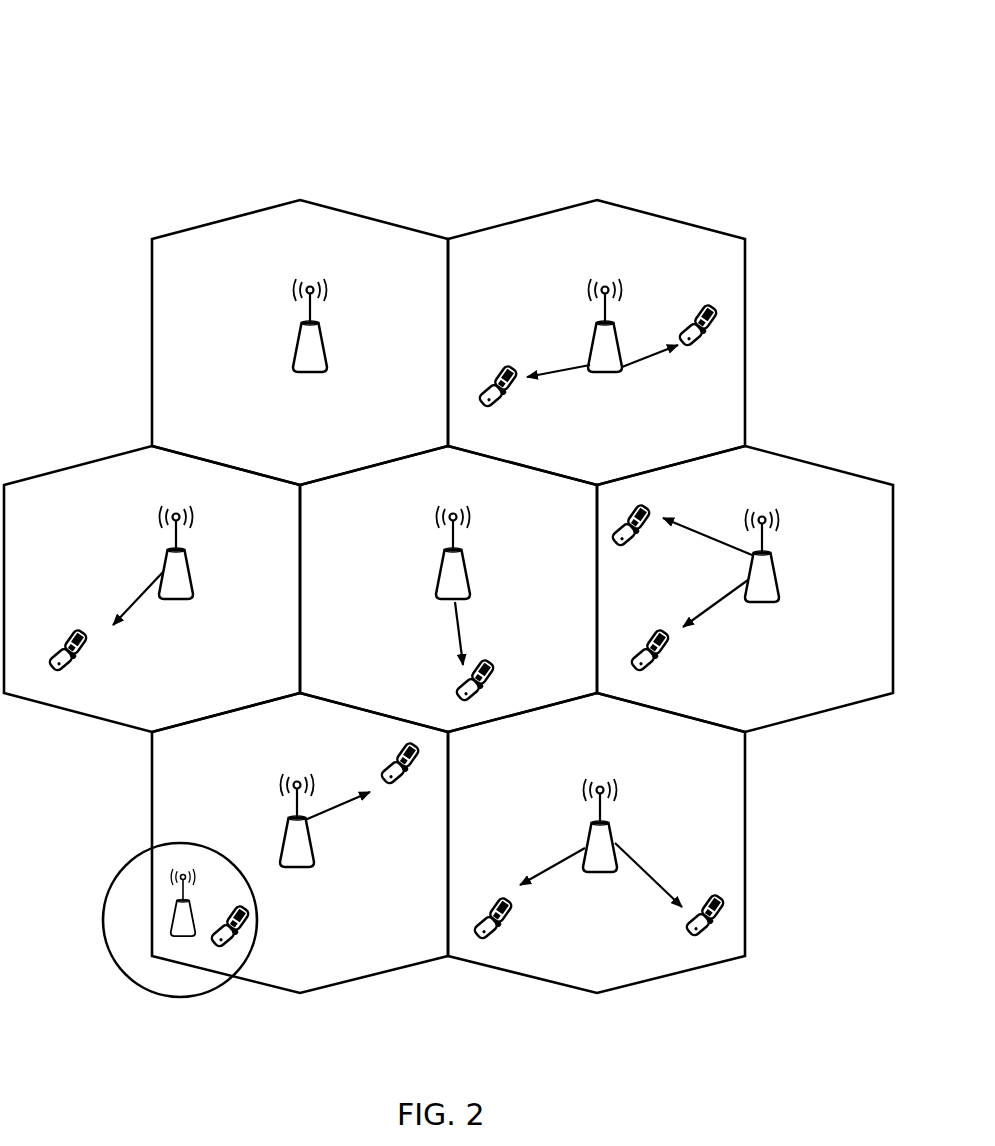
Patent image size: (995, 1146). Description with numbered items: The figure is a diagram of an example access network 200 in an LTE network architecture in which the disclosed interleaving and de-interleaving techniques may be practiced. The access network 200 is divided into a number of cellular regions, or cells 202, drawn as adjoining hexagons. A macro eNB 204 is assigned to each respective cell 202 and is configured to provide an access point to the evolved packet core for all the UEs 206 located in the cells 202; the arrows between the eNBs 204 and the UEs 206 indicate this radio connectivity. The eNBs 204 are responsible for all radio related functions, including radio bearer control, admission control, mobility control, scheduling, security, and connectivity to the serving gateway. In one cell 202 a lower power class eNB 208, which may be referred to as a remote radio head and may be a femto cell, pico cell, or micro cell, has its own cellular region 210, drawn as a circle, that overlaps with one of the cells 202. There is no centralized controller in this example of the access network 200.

The access network 200 is at (448, 505).
The cellular regions (cells) 202 is at (152, 268).
The macro eNBs 204 is at (310, 287).
The UEs 206 is at (510, 400).
The lower power class eNB 208 is at (179, 901).
The cellular region of lower power class eNB 210 is at (111, 962).